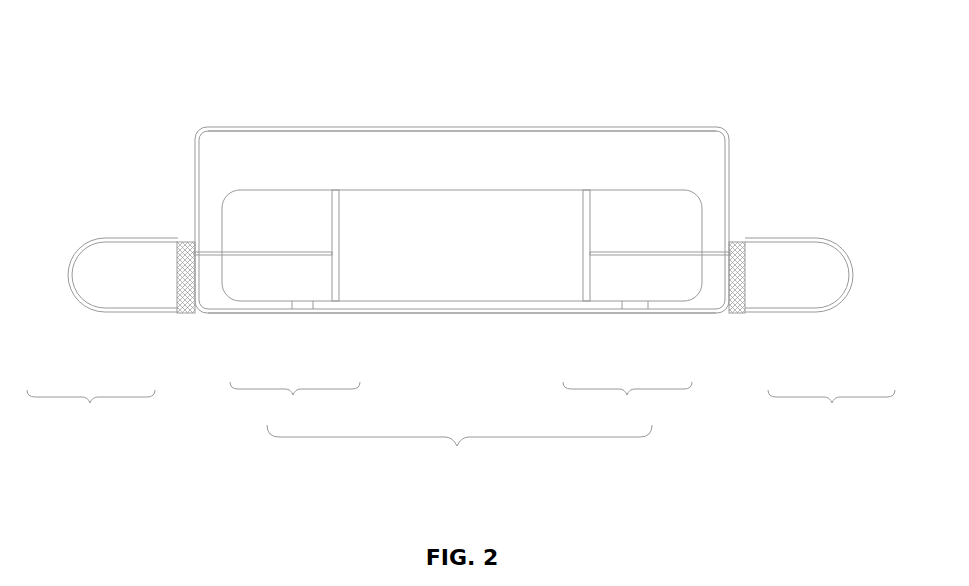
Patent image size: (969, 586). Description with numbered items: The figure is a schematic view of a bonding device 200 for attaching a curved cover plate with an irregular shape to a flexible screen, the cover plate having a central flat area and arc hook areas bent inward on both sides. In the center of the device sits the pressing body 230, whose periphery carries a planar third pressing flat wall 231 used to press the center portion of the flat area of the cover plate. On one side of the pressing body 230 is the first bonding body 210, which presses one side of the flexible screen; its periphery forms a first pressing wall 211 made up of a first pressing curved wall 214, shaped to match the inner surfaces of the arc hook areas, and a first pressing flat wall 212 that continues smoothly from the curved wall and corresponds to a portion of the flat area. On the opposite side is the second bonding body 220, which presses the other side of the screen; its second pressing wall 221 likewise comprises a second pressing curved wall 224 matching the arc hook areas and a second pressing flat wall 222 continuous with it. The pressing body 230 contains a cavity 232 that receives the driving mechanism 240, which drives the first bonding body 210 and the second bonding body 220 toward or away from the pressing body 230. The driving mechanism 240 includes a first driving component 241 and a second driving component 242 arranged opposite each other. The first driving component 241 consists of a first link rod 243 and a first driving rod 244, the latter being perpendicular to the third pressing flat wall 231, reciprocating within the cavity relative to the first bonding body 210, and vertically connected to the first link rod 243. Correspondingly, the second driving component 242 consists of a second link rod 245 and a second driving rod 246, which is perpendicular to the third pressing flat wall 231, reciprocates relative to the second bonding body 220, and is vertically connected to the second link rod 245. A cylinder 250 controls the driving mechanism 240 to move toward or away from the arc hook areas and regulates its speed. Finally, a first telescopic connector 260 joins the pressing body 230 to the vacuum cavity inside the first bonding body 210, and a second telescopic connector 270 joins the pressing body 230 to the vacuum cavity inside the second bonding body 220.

The bonding device 200 is at (83, 67).
The first bonding body 210 is at (128, 267).
The first pressing wall 211 is at (91, 410).
The first pressing flat wall 212 is at (133, 313).
The first pressing curved wall 214 is at (69, 283).
The second bonding body 220 is at (797, 265).
The second pressing wall 221 is at (831, 411).
The second pressing flat wall 222 is at (852, 280).
The second pressing curved wall 224 is at (790, 313).
The pressing body 230 is at (373, 127).
The third pressing flat wall 231 is at (460, 313).
The cavity 232 is at (473, 152).
The driving mechanism 240 is at (459, 452).
The first driving component 241 is at (295, 404).
The second driving component 242 is at (627, 404).
The first link rod 243 is at (260, 255).
The first driving rod 244 is at (334, 280).
The second link rod 245 is at (660, 255).
The second driving rod 246 is at (590, 280).
The cylinder 250 is at (543, 190).
The first telescopic connector 260 is at (184, 313).
The second telescopic connector 270 is at (738, 313).